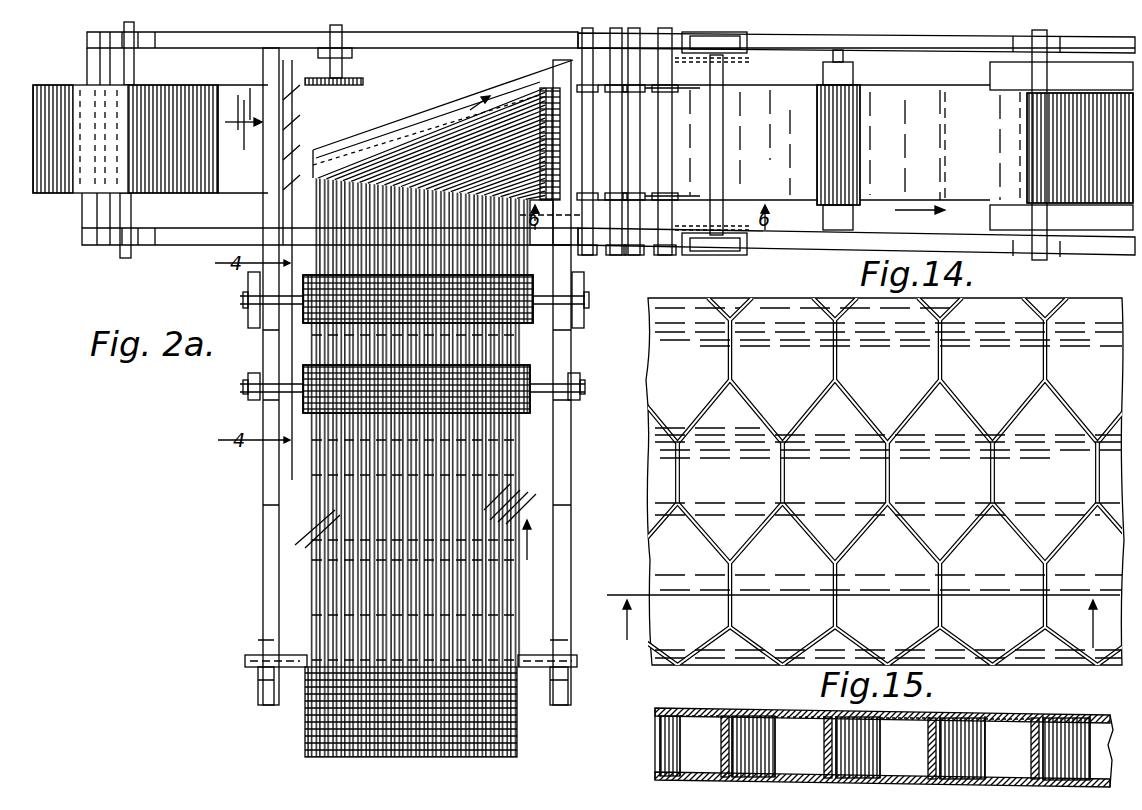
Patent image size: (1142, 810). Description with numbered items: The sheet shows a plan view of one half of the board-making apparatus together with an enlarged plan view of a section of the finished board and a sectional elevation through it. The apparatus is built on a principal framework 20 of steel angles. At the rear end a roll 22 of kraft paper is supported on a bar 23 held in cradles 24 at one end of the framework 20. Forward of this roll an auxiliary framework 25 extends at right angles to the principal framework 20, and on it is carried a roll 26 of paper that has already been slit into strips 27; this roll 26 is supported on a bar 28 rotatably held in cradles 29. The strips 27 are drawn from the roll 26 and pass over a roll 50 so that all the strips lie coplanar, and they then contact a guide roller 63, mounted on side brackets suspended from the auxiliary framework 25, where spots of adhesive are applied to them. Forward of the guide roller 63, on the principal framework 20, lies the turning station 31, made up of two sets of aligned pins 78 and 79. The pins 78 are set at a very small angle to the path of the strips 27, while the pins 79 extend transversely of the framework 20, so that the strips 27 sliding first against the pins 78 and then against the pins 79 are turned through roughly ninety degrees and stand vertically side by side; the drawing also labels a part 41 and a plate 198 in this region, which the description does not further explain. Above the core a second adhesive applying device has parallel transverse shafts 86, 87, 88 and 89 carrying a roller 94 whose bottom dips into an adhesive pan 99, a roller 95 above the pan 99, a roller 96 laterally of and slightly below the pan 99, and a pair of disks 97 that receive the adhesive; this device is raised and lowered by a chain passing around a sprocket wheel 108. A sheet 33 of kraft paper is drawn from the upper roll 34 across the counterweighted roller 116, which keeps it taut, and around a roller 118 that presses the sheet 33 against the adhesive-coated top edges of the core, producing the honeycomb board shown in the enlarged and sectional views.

In FIG. 2a, the framework 20 is at (457, 33).
In FIG. 14, the framework 20 is at (578, 48).
In FIG. 2a, the roll of kraft paper 22 is at (75, 150).
In FIG. 2a, the bar 23 is at (135, 73).
In FIG. 2a, the cradles 24 is at (140, 30).
In FIG. 2a, the auxiliary framework 25 is at (560, 476).
In FIG. 2a, the roll of slit paper 26 is at (305, 722).
In FIG. 2a, the strips of paper 27 is at (510, 500).
In FIG. 2a, the bar 28 is at (522, 657).
In FIG. 2a, the cradles 29 is at (258, 648).
In FIG. 2a, the turning station 31 is at (428, 128).
In FIG. 14, the sheet of paper 33 is at (895, 125).
In FIG. 14, the roll 34 is at (1100, 92).
In FIG. 2a, the strip sheet 41 is at (250, 182).
In FIG. 2a, the roll 50 is at (528, 370).
In FIG. 2a, the guide roller 63 is at (536, 290).
In FIG. 2a, the pins 78 is at (322, 168).
In FIG. 2a, the pins 79 is at (540, 95).
In FIG. 14, the transverse shaft 86 is at (590, 255).
In FIG. 14, the transverse shaft 87 is at (616, 255).
In FIG. 14, the transverse shaft 88 is at (636, 255).
In FIG. 14, the transverse shaft 89 is at (672, 253).
In FIG. 14, the roller 94 is at (590, 82).
In FIG. 14, the roller 95 is at (618, 82).
In FIG. 14, the roller 96 is at (642, 82).
In FIG. 14, the disks 97 is at (672, 50).
In FIG. 14, the adhesive pan 99 is at (568, 58).
In FIG. 14, the sprocket wheel 108 is at (712, 235).
In FIG. 14, the counterweighted roller 116 is at (835, 82).
In FIG. 14, the roller 118 is at (725, 83).
In FIG. 2a, the plate 198 is at (365, 83).